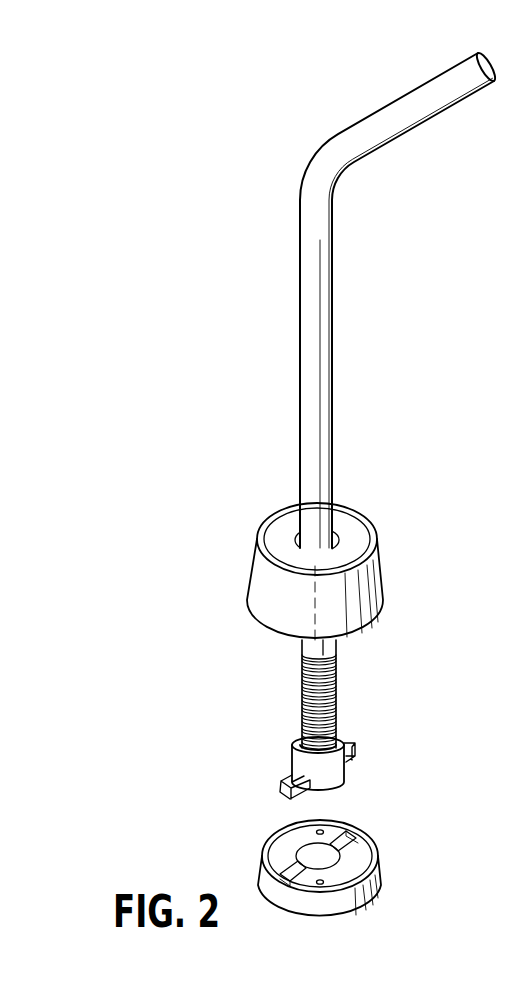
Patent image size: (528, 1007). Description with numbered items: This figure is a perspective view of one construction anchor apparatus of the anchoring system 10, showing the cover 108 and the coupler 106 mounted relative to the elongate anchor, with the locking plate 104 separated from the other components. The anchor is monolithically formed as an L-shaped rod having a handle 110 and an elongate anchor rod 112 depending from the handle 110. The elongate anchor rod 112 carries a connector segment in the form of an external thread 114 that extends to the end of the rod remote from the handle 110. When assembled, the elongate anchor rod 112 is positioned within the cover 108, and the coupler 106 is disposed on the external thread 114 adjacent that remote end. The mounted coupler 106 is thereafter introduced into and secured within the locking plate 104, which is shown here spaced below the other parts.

The anchoring system 10 is at (235, 341).
The locking plate 104 is at (353, 868).
The coupler 106 is at (346, 760).
The cover 108 is at (348, 571).
The handle 110 is at (399, 299).
The elongate anchor rod 112 is at (364, 325).
The external thread 114 is at (352, 694).